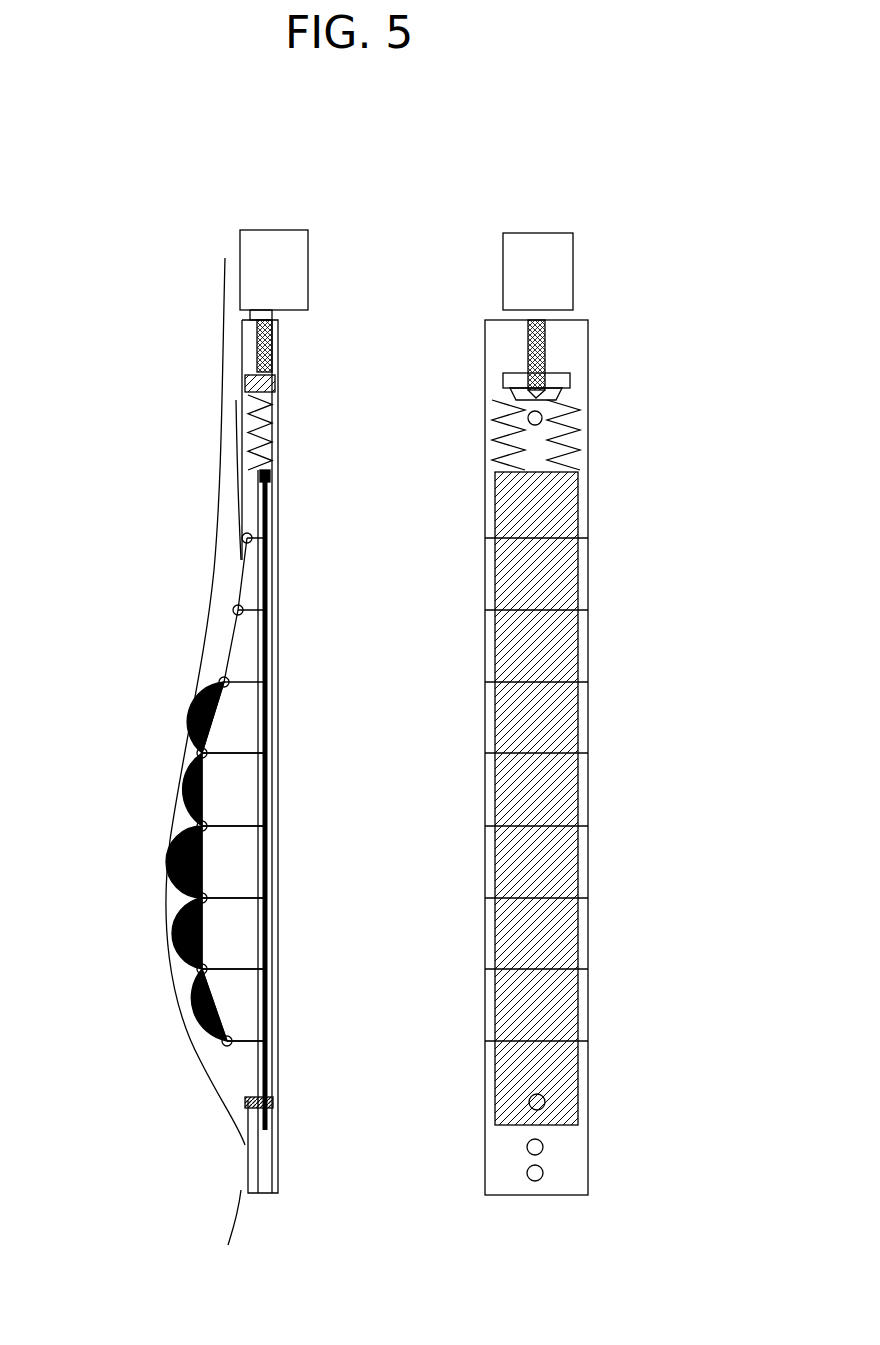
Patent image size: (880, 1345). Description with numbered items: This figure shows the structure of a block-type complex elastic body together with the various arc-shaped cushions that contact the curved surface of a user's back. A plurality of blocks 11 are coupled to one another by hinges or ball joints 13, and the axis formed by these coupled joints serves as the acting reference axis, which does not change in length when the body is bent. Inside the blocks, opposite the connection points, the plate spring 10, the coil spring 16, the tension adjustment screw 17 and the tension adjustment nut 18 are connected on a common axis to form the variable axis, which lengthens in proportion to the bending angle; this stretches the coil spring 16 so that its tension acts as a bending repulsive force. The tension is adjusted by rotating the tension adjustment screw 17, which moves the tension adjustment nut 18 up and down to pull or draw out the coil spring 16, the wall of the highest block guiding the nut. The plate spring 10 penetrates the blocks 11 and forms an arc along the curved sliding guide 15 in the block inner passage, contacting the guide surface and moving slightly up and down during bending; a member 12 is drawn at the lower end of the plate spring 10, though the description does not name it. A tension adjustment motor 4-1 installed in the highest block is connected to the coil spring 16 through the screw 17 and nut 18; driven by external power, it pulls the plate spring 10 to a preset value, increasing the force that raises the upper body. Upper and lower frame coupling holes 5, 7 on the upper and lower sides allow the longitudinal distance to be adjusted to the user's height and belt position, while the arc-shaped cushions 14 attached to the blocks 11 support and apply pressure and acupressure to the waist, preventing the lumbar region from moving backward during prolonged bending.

The tension adjustment motor 4-1 is at (340, 264).
The upper frame coupling hole 5 is at (604, 363).
The lower frame coupling hole 7 is at (479, 826).
The plate spring 10 is at (317, 797).
The block 11 is at (288, 789).
The stopper block 12 is at (302, 1060).
The ball joint 13 is at (168, 755).
The cushion 14 is at (153, 856).
The sliding guide 15 is at (165, 910).
The coil spring 16 is at (311, 432).
The tension adjustment screw 17 is at (192, 328).
The tension adjustment nut 18 is at (194, 355).